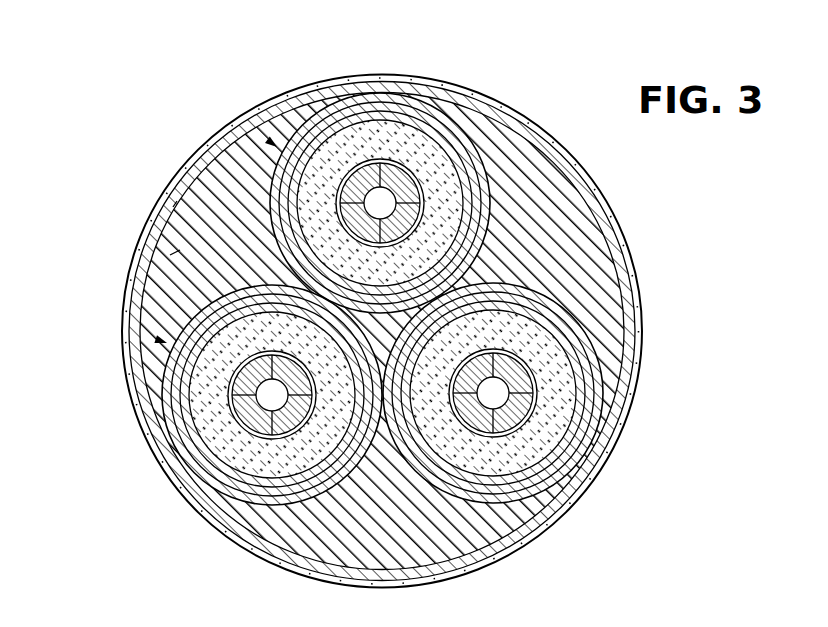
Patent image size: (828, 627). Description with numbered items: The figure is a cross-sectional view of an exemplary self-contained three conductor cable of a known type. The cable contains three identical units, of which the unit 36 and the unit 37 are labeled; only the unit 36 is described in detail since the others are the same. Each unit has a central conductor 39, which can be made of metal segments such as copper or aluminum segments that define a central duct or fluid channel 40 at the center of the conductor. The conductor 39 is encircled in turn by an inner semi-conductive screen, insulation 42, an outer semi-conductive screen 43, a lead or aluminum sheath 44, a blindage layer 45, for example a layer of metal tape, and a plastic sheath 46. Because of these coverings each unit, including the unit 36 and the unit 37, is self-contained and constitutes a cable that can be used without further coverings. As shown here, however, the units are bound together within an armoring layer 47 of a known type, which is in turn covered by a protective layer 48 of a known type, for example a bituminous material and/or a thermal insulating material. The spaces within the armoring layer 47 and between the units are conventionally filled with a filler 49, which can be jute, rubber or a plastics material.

The unit 36 is at (277, 147).
The unit 37 is at (167, 343).
The central conductor 39 is at (655, 337).
The central duct or fluid channel 40 is at (250, 340).
The insulation 42 is at (573, 322).
The outer semi-conductive screen 43 is at (190, 403).
The lead or aluminum sheath 44 is at (177, 443).
The blindage layer 45 is at (197, 490).
The plastic sheath 46 is at (227, 528).
The armoring layer 47 is at (173, 207).
The protective layer 48 is at (330, 78).
The filler 49 is at (170, 255).